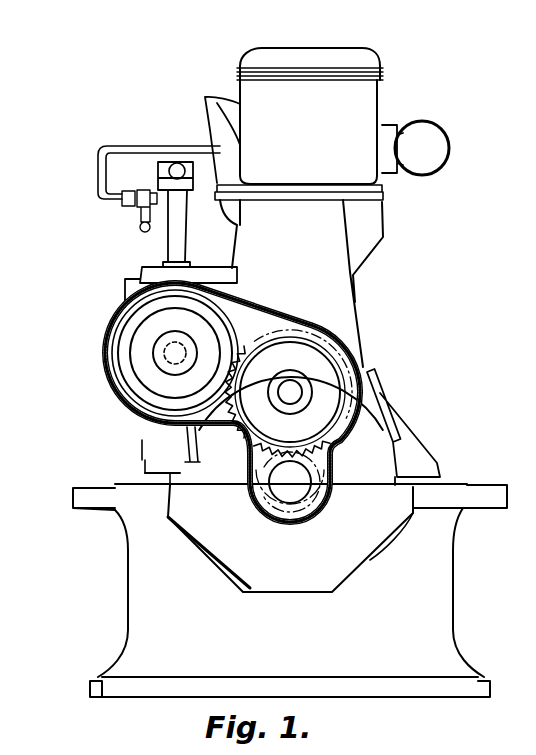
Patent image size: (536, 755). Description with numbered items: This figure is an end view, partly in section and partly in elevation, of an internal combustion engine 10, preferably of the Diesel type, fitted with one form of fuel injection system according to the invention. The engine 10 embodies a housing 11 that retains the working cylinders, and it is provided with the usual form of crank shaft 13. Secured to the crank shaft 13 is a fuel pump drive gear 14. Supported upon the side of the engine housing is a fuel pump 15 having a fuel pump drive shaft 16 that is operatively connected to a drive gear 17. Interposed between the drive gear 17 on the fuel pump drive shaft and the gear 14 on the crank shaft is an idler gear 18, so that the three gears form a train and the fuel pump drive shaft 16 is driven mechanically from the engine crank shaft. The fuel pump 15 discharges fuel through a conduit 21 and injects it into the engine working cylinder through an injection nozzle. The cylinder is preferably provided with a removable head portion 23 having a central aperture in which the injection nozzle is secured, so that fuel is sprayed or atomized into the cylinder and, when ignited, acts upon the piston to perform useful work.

The internal combustion engine 10 is at (453, 585).
The housing 11 is at (357, 327).
The crank shaft 13 is at (300, 480).
The fuel pump drive gear 14 is at (312, 507).
The fuel pump 15 is at (140, 268).
The fuel pump drive shaft 16 is at (165, 353).
The drive gear 17 is at (130, 405).
The idler gear 18 is at (240, 440).
The conduit 21 is at (95, 170).
The removable head portion 23 is at (340, 102).